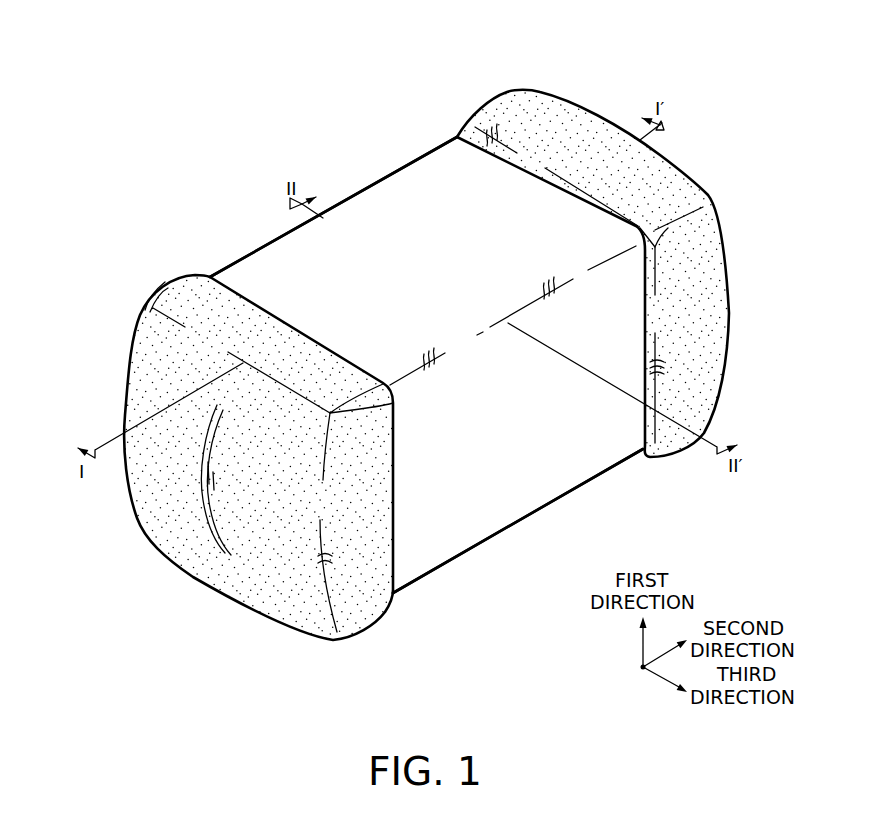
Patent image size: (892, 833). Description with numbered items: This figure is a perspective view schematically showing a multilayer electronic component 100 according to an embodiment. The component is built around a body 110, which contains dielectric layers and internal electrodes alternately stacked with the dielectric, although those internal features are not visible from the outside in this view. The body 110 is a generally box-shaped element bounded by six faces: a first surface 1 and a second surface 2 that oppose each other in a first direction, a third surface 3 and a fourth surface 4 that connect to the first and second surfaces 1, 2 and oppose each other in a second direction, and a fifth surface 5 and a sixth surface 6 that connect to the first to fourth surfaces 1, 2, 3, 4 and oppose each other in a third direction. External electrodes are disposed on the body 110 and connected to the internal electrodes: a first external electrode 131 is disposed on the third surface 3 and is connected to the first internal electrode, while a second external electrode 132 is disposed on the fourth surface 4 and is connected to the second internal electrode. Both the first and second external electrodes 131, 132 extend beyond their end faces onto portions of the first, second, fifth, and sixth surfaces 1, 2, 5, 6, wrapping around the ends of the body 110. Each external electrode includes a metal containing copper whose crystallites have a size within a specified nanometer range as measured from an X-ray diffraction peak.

The multilayer electronic component 100 is at (186, 31).
The body 110 is at (367, 203).
The first surface 1 is at (430, 184).
The second surface 2 is at (485, 549).
The third surface 3 is at (181, 541).
The fourth surface 4 is at (590, 134).
The fifth surface 5 is at (252, 242).
The sixth surface 6 is at (547, 479).
The first external electrode 131 is at (258, 432).
The second external electrode 132 is at (593, 250).